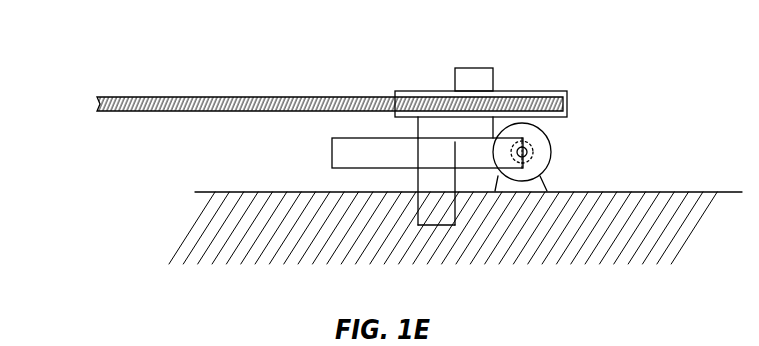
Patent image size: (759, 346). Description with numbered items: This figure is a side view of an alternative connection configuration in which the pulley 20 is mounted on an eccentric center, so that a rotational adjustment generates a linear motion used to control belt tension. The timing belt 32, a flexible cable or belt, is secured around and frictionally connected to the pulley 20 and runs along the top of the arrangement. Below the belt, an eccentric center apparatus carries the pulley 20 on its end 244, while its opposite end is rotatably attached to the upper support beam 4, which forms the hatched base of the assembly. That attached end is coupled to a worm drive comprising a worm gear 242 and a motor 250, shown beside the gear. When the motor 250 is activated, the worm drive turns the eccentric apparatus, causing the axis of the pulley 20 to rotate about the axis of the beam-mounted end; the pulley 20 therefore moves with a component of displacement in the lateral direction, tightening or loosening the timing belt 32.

The upper support beam 4 is at (210, 185).
The pulley 20 is at (523, 88).
The timing belt 32 is at (207, 97).
The worm gear 242 is at (328, 155).
The end 244 is at (477, 66).
The motor 250 is at (552, 152).